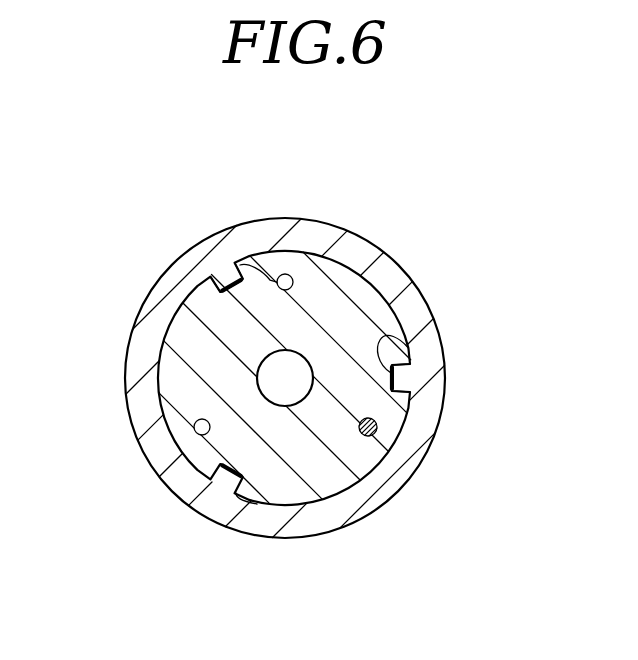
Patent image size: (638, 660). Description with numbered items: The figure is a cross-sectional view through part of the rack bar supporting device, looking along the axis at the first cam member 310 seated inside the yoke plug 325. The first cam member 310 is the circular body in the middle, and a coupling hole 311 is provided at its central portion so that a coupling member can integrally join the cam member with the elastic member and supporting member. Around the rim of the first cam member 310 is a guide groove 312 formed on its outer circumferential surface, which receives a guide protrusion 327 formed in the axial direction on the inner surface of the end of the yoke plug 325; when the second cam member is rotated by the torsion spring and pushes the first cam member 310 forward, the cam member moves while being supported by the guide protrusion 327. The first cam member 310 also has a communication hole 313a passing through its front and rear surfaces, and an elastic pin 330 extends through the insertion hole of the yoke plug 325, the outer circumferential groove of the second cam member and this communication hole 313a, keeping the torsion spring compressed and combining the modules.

The first cam member 310 is at (172, 366).
The coupling hole 311 is at (305, 401).
The guide groove 312 is at (408, 350).
The communication hole 313a is at (240, 264).
The yoke plug 325 is at (350, 502).
The guide protrusion 327 is at (403, 378).
The elastic pin 330 is at (377, 427).